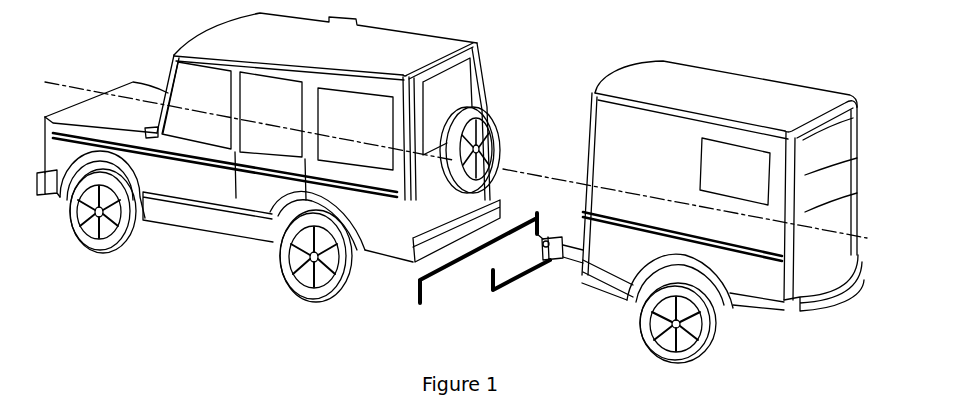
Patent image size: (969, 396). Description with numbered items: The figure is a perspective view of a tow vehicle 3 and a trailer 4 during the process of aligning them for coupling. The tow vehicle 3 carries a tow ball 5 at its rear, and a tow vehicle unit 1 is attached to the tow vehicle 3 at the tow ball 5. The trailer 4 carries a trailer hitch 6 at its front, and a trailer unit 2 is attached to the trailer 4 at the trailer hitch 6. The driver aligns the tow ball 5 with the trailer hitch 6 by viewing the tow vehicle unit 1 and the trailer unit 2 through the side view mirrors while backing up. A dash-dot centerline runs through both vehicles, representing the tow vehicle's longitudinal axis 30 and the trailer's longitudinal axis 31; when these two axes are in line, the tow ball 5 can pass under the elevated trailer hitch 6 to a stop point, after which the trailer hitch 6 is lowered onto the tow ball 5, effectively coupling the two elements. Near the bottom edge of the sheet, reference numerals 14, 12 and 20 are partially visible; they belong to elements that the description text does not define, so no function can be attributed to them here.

The tow vehicle unit 1 is at (501, 227).
The trailer unit 2 is at (543, 266).
The tow vehicle 3 is at (155, 47).
The trailer 4 is at (782, 92).
The tow ball 5 is at (495, 237).
The trailer hitch 6 is at (544, 240).
The tow vehicle's longitudinal axis 30 is at (48, 82).
The trailer's longitudinal axis 31 is at (868, 238).
The component (partial, figure below) 14 is at (128, 395).
The component (partial, figure below) 12 is at (207, 390).
The component (partial, figure below) 20 is at (75, 392).